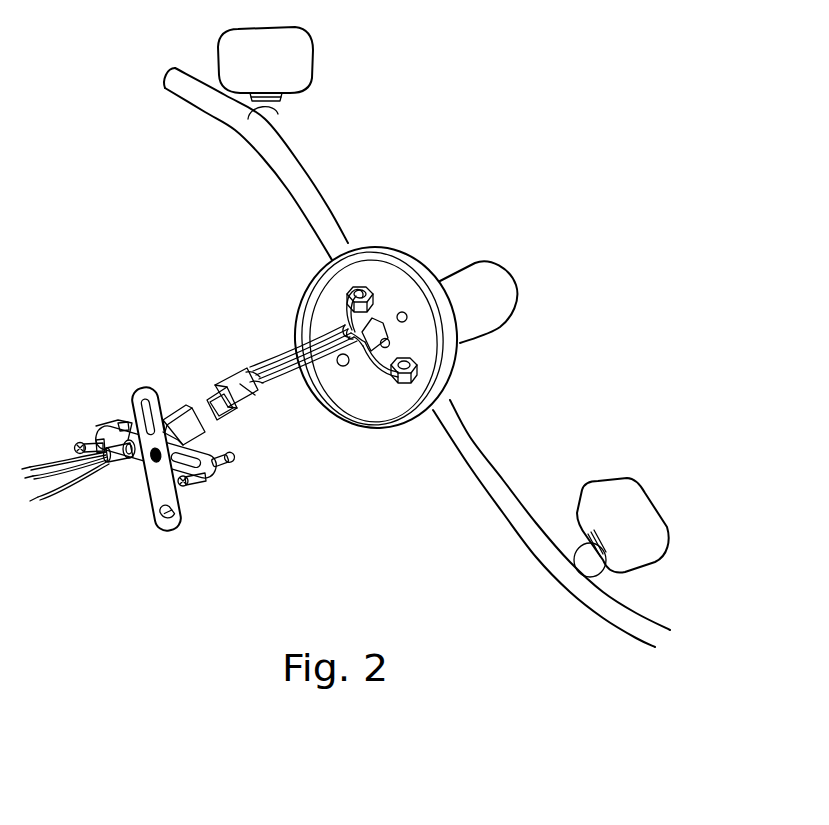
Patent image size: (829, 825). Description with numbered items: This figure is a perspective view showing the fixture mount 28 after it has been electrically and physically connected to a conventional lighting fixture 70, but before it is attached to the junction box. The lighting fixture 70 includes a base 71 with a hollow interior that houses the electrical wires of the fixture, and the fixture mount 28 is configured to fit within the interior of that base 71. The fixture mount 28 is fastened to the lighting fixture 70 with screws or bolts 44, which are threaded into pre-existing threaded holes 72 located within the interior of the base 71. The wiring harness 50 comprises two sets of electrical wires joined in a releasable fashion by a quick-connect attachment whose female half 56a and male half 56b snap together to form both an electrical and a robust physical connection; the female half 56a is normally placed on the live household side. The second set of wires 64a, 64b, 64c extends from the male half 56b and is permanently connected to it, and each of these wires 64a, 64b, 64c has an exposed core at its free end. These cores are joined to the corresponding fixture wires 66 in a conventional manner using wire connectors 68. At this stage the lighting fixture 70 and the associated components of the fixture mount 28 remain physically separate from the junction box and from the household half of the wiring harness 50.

The fixture mount 28 is at (73, 396).
The screw or bolt 44 is at (230, 466).
The wiring harness 50 is at (207, 366).
The female quick-connect half 56a is at (185, 418).
The male quick-connect half 56b is at (242, 392).
The electrical wire 64a is at (258, 372).
The electrical wire 64b is at (263, 383).
The electrical wire 64c is at (255, 395).
The fixture wire 66 is at (348, 294).
The wire connector 68 is at (371, 351).
The lighting fixture 70 is at (312, 183).
The base 71 is at (412, 260).
The threaded hole 72 is at (346, 368).